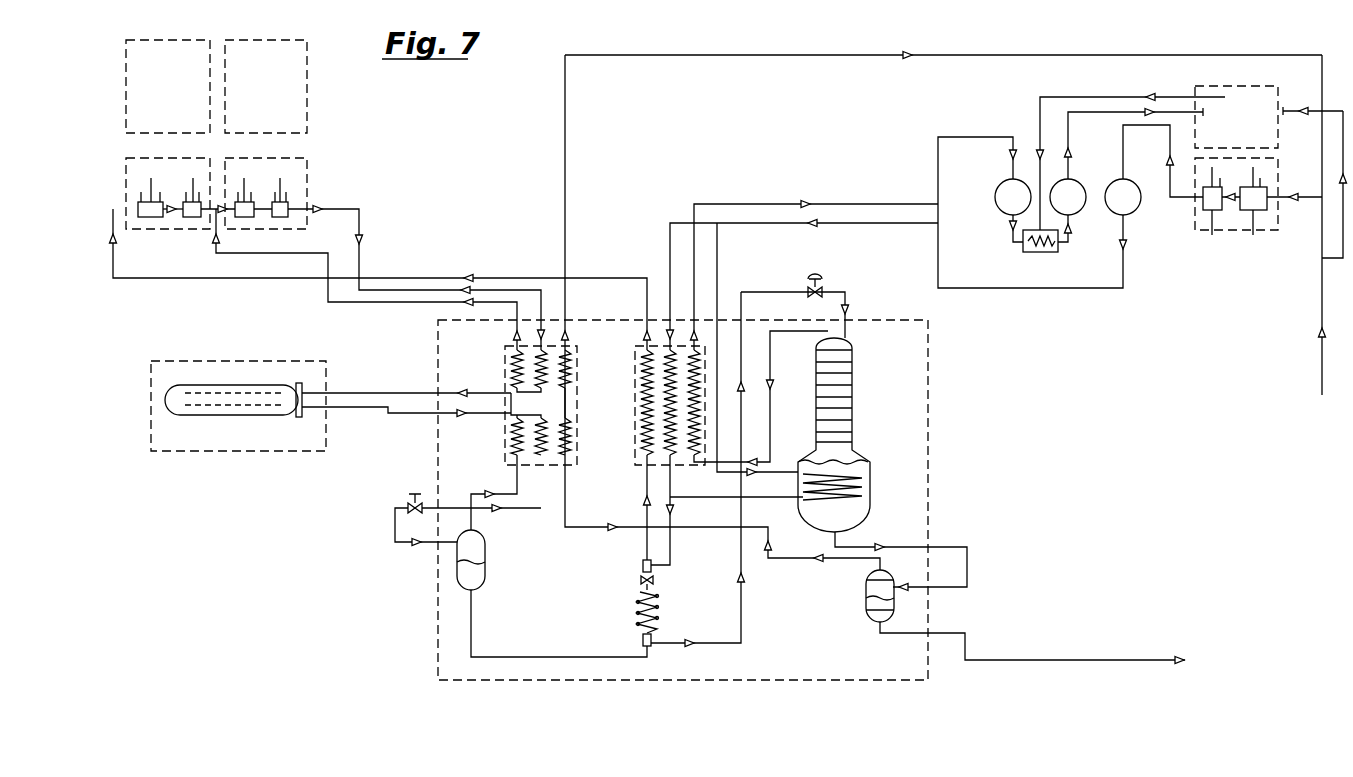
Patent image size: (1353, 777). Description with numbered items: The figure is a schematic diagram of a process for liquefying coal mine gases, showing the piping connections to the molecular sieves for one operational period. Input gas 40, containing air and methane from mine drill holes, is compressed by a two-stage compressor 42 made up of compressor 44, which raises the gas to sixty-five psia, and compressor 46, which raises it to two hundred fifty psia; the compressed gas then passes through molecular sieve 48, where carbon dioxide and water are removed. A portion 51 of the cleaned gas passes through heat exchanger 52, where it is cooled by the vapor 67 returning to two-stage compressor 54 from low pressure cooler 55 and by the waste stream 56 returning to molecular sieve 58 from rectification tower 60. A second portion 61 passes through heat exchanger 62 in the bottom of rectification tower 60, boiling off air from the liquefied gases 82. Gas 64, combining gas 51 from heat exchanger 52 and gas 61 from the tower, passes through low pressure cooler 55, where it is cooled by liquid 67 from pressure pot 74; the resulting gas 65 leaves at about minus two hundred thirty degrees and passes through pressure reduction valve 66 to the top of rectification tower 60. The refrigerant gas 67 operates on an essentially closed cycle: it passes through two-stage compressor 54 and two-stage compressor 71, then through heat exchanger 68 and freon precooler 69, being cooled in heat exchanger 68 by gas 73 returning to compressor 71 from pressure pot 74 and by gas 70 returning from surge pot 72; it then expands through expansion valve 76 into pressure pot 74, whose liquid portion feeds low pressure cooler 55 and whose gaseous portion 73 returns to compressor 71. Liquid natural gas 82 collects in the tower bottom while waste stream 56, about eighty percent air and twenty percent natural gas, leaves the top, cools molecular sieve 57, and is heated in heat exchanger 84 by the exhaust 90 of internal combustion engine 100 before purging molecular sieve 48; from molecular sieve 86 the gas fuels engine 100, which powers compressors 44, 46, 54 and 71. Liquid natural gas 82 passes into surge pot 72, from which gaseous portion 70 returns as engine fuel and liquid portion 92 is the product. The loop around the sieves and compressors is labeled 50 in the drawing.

The input gas 40 is at (1312, 348).
The two-stage compressor 42 is at (1238, 232).
The compressor 44 is at (1253, 235).
The compressor 46 is at (1212, 235).
The molecular sieve 48 is at (1133, 205).
The compressor loop 50 is at (1058, 290).
The portion of cleaned gas 51 is at (668, 245).
The heat exchanger 52 is at (636, 362).
The two-stage compressor 54 is at (172, 228).
The low pressure cooler 55 is at (660, 600).
The waste stream 56 is at (858, 203).
The molecular sieve 57 is at (1071, 142).
The molecular sieve 58 is at (996, 195).
The rectification tower 60 is at (853, 393).
The second portion of cleaned gas 61 is at (720, 270).
The heat exchanger 62 is at (866, 482).
The gas 64 is at (675, 545).
The gas 65 is at (710, 642).
The pressure reduction valve 66 is at (820, 284).
The liquid and vapour 67 is at (360, 212).
The heat exchanger 68 is at (508, 362).
The freon precooler 69 is at (240, 385).
The gaseous portion 70 is at (567, 158).
The two-stage compressor 71 is at (262, 228).
The surge pot 72 is at (864, 605).
The gaseous portion 73 is at (405, 307).
The pressure pot 74 is at (487, 552).
The expansion valve 76 is at (406, 500).
The liquid natural gas 82 is at (860, 462).
The heat exchanger 84 is at (1023, 250).
The molecular sieve 86 is at (1075, 178).
The exhaust 90 is at (1038, 115).
The liquid portion 92 is at (950, 632).
The internal combustion engine 100 is at (1230, 90).